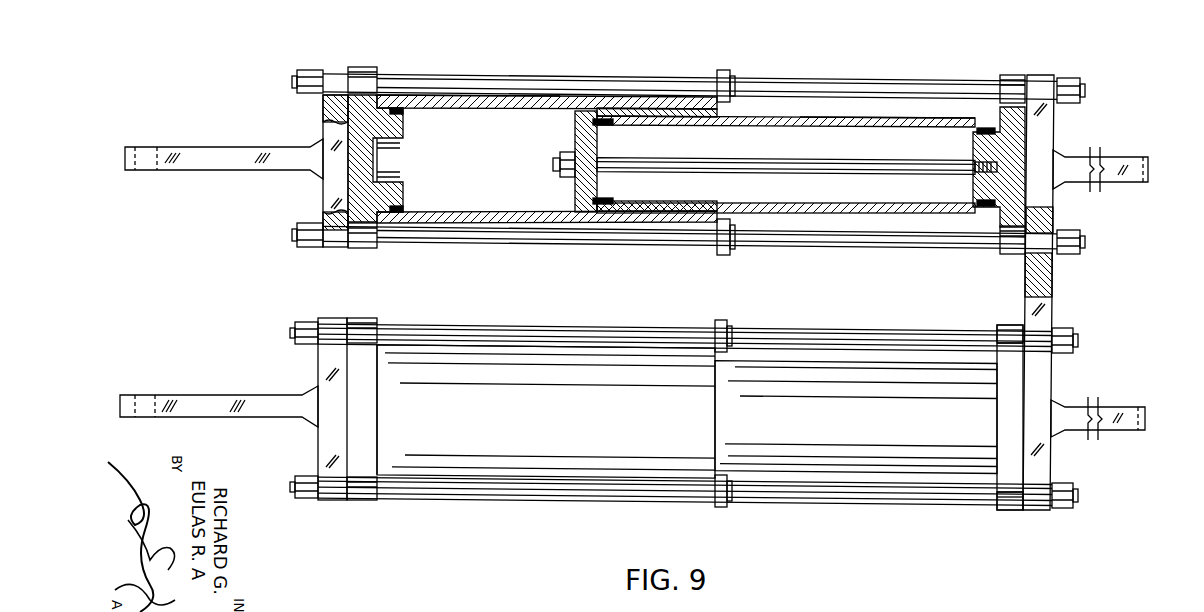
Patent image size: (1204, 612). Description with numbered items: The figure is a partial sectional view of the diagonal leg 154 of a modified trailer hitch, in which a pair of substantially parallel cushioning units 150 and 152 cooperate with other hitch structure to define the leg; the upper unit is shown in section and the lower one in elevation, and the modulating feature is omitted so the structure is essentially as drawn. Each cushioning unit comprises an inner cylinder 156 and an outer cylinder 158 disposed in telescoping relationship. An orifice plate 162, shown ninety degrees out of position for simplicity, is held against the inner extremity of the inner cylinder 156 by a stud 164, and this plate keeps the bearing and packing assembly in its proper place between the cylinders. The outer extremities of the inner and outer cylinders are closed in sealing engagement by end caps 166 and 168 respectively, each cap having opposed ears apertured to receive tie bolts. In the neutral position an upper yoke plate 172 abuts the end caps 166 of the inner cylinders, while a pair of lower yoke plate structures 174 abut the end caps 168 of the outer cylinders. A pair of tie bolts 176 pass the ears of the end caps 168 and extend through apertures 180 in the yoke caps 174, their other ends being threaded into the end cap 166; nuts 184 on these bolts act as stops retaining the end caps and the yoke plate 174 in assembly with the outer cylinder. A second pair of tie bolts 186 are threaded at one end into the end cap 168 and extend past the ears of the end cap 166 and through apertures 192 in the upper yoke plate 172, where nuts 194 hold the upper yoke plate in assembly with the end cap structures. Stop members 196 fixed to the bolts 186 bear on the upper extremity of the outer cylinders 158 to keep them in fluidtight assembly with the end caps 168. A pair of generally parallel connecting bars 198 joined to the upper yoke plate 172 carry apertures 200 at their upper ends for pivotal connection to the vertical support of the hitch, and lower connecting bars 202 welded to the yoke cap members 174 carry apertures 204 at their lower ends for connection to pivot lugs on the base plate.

The cushioning unit 150 is at (892, 108).
The cushioning unit 152 is at (938, 478).
The diagonal leg 154 is at (562, 72).
The inner cylinder 156 is at (860, 216).
The outer cylinder 158 is at (521, 222).
The orifice plate 162 is at (576, 195).
The stud 164 is at (683, 168).
The end cap 166 is at (992, 218).
The end cap 168 is at (388, 226).
The upper yoke plate 172 is at (1040, 320).
The lower yoke plate structure 174 is at (330, 193).
The tie bolt 176 is at (457, 82).
The aperture 180 is at (346, 93).
The nut 184 is at (305, 97).
The tie bolt 186 is at (463, 240).
The aperture 192 is at (1030, 270).
The nut 194 is at (1064, 250).
The stop member 196 is at (727, 70).
The connecting bar 198 is at (1078, 178).
The aperture 200 is at (1134, 155).
The lower connecting bar 202 is at (228, 162).
The aperture 204 is at (146, 147).